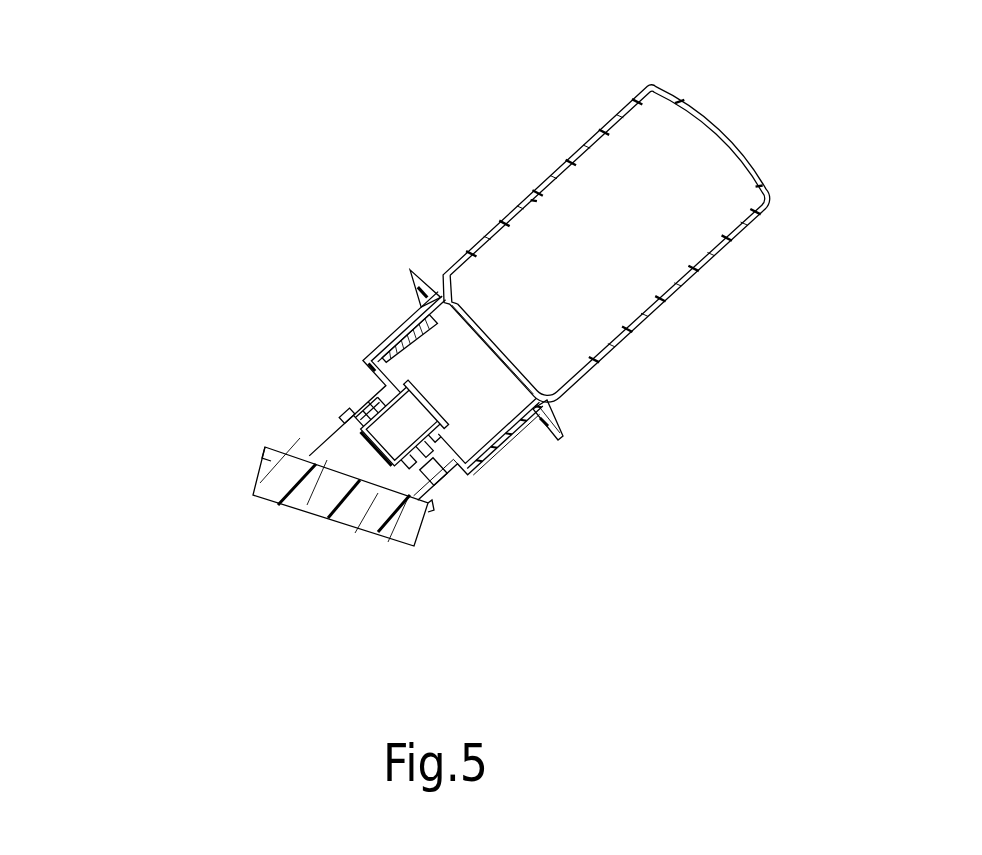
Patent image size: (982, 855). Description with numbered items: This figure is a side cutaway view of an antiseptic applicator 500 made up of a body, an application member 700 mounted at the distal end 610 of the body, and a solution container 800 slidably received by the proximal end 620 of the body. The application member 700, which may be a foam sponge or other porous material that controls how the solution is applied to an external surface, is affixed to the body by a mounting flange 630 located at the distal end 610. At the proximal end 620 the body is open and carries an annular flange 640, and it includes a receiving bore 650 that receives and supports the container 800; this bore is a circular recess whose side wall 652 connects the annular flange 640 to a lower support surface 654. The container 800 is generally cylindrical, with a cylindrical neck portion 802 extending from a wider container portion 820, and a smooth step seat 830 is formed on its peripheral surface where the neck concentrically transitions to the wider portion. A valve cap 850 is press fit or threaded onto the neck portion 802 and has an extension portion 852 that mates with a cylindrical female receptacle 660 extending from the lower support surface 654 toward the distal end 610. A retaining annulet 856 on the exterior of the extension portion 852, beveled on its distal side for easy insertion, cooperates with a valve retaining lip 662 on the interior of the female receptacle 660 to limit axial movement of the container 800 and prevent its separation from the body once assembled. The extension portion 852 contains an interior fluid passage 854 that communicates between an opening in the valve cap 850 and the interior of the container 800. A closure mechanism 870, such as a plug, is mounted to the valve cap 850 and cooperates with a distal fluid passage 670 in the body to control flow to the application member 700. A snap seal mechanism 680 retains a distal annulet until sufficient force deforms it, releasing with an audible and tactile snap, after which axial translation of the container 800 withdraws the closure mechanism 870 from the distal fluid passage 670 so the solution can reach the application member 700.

The antiseptic applicator 500 is at (322, 133).
The distal end 610 is at (263, 503).
The proximal end 620 is at (543, 427).
The mounting flange 630 is at (280, 445).
The annular flange 640 is at (411, 270).
The receiving bore 650 is at (500, 465).
The side wall 652 is at (527, 420).
The lower support surface 654 is at (463, 465).
The female receptacle 660 is at (370, 420).
The valve retaining lip 662 is at (378, 416).
The distal fluid passage 670 is at (326, 505).
The snap seal mechanism 680 is at (344, 411).
The application member 700 is at (276, 486).
The solution container 800 is at (703, 290).
The cylindrical neck portion 802 is at (487, 375).
The wider container portion 820 is at (550, 207).
The smooth step seat 830 is at (483, 305).
The valve cap 850 is at (512, 439).
The extension portion 852 is at (380, 393).
The interior fluid passage 854 is at (403, 478).
The retaining annulet 856 is at (442, 478).
The closure mechanism 870 is at (383, 435).